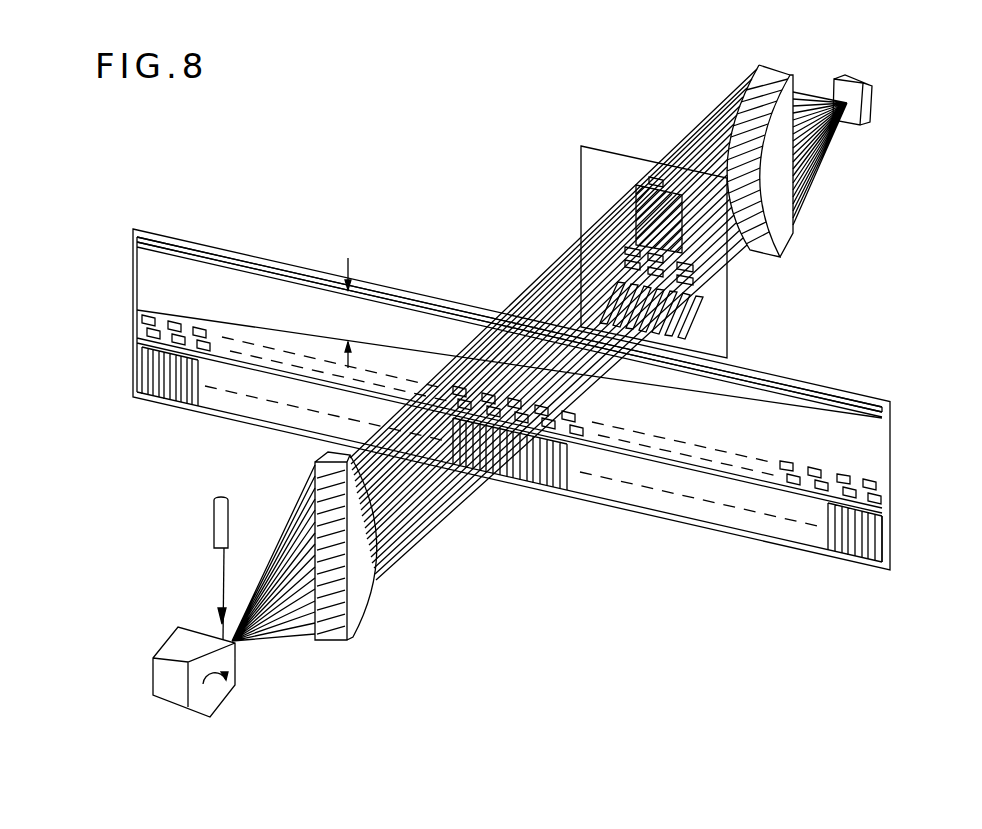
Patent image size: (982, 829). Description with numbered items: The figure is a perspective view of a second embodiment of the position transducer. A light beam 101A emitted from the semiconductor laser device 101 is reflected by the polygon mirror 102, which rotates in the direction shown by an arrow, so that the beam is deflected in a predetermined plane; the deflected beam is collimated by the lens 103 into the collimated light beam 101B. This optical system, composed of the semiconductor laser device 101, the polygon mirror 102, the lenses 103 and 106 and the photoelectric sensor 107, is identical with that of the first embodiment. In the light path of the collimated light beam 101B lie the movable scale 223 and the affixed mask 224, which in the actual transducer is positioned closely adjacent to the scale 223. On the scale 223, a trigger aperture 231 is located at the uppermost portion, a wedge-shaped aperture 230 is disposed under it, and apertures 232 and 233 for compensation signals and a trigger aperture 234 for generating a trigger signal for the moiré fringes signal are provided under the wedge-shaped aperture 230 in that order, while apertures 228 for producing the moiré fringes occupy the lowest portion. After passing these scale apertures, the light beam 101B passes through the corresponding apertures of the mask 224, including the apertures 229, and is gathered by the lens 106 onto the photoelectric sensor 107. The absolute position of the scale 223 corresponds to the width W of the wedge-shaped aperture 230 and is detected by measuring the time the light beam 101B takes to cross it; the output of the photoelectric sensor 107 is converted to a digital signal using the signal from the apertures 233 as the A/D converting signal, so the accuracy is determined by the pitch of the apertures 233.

The semiconductor laser device 101 is at (213, 520).
The light beam 101A is at (220, 583).
The collimated light beam 101B is at (400, 560).
The polygon mirror 102 is at (223, 695).
The lens 103 is at (350, 630).
The lens 106 is at (787, 233).
The photoelectric sensor 107 is at (868, 108).
The scale 223 is at (188, 243).
The mask 224 is at (713, 298).
The apertures for producing moiré fringes 228 is at (566, 472).
The mask apertures 229 is at (690, 317).
The wedge-shaped aperture 230 is at (278, 290).
The trigger aperture 231 is at (421, 300).
The apertures for compensation signals 232 is at (877, 486).
The apertures for compensation signals 233 is at (881, 499).
The trigger aperture 234 is at (882, 514).